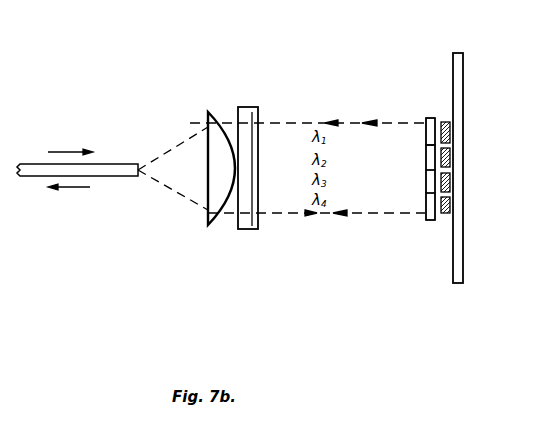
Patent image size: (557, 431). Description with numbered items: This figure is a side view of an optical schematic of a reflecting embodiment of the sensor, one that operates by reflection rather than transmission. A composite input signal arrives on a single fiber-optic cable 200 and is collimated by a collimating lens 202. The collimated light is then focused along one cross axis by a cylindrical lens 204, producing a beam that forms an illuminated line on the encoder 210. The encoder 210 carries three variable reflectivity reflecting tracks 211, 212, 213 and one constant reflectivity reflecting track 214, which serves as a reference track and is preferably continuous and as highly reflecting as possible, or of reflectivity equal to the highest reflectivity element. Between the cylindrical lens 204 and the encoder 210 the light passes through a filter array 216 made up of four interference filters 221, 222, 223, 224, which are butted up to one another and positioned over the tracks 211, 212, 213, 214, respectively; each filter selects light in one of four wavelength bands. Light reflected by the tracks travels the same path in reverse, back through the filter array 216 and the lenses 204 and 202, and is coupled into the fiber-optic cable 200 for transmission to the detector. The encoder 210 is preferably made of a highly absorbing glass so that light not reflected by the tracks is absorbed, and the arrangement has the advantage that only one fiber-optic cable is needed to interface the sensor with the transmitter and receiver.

The fiber-optic cable 200 is at (108, 163).
The collimating lens 202 is at (207, 124).
The cylindrical lens 204 is at (254, 115).
The encoder 210 is at (463, 58).
The variable reflectivity reflecting track 211 is at (437, 116).
The variable reflectivity reflecting track 212 is at (464, 150).
The variable reflectivity reflecting track 213 is at (450, 185).
The constant reflectivity reflecting track 214 is at (445, 216).
The filter array 216 is at (426, 110).
The interference filter 221 is at (425, 130).
The interference filter 222 is at (425, 158).
The interference filter 223 is at (424, 188).
The interference filter 224 is at (426, 222).